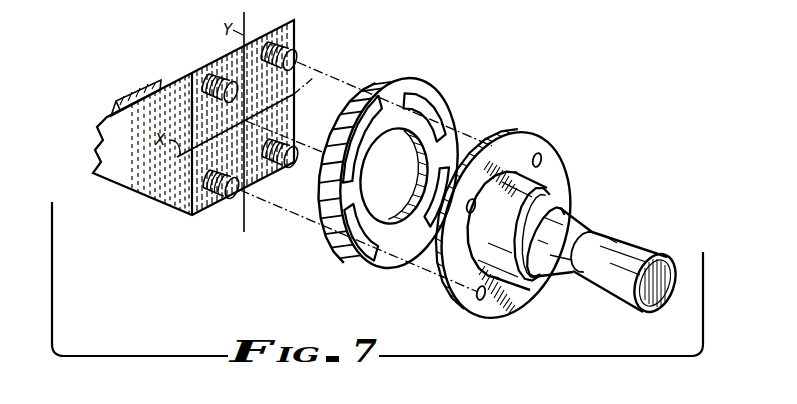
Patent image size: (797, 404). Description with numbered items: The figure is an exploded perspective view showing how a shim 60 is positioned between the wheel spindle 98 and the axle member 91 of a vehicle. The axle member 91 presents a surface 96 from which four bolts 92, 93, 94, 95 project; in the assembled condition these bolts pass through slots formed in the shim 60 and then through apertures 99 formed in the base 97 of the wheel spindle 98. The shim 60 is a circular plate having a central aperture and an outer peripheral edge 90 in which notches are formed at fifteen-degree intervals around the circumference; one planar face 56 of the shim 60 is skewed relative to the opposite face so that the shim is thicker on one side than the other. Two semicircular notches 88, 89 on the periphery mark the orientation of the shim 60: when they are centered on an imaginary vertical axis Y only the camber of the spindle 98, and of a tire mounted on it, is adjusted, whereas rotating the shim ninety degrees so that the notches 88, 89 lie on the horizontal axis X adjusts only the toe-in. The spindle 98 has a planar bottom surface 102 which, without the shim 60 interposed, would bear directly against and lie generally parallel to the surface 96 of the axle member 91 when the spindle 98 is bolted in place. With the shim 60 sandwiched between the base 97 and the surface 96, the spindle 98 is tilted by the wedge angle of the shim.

The planar face 56 is at (357, 257).
The shim 60 is at (472, 112).
The semicircular notch 88 is at (384, 88).
The semicircular notch 89 is at (395, 258).
The outer peripheral edge 90 is at (312, 224).
The axle member 91 is at (166, 218).
The bolt 92 is at (222, 76).
The bolt 93 is at (291, 24).
The bolt 94 is at (232, 200).
The bolt 95 is at (294, 167).
The surface of axle member 96 is at (197, 118).
The base of wheel spindle 97 is at (574, 176).
The wheel spindle 98 is at (647, 235).
The apertures 99 is at (542, 152).
The bottom surface of spindle 102 is at (492, 147).